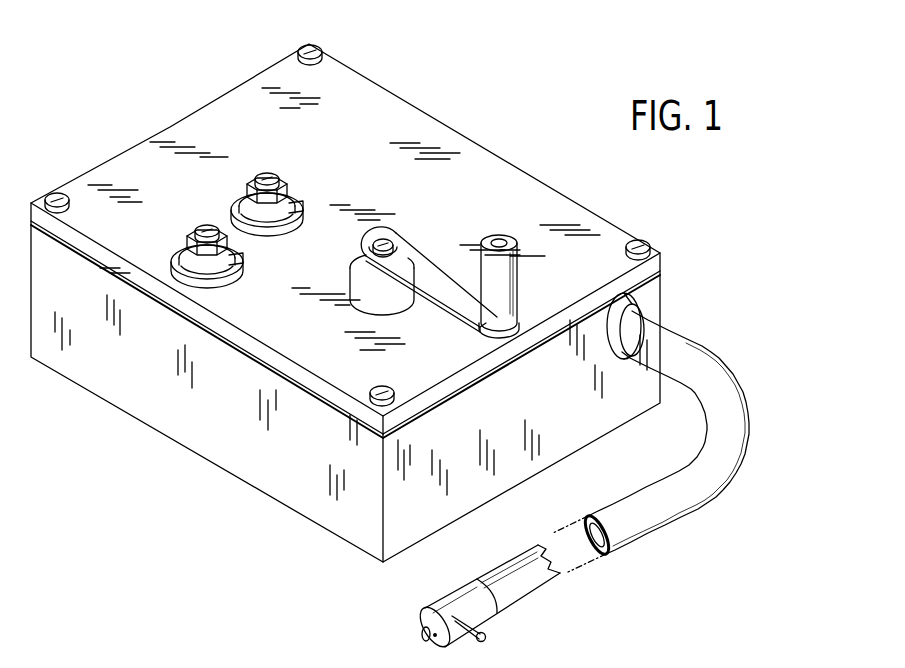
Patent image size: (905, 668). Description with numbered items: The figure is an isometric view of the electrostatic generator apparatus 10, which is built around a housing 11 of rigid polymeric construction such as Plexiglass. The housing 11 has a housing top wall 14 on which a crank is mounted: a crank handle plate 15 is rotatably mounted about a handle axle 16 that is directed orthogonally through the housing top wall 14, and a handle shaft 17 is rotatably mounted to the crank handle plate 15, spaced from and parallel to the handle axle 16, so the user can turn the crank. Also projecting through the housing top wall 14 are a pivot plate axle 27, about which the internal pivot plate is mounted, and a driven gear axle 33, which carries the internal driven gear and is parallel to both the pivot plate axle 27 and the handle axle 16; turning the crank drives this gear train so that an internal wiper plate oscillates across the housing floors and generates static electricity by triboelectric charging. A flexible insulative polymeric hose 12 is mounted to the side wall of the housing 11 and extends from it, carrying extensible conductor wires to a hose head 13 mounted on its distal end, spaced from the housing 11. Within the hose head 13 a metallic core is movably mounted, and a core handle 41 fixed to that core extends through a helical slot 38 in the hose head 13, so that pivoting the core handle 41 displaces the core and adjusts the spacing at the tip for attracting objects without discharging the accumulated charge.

The electrostatic generator apparatus 10 is at (424, 84).
The housing 11 is at (597, 209).
The flexible insulative polymeric hose 12 is at (687, 353).
The hose head 13 is at (467, 601).
The housing top wall 14 is at (488, 163).
The crank handle plate 15 is at (413, 260).
The handle axle 16 is at (365, 247).
The handle shaft 17 is at (502, 290).
The pivot plate axle 27 is at (192, 236).
The driven gear axle 33 is at (272, 178).
The helical slot 38 is at (421, 630).
The core handle 41 is at (488, 628).